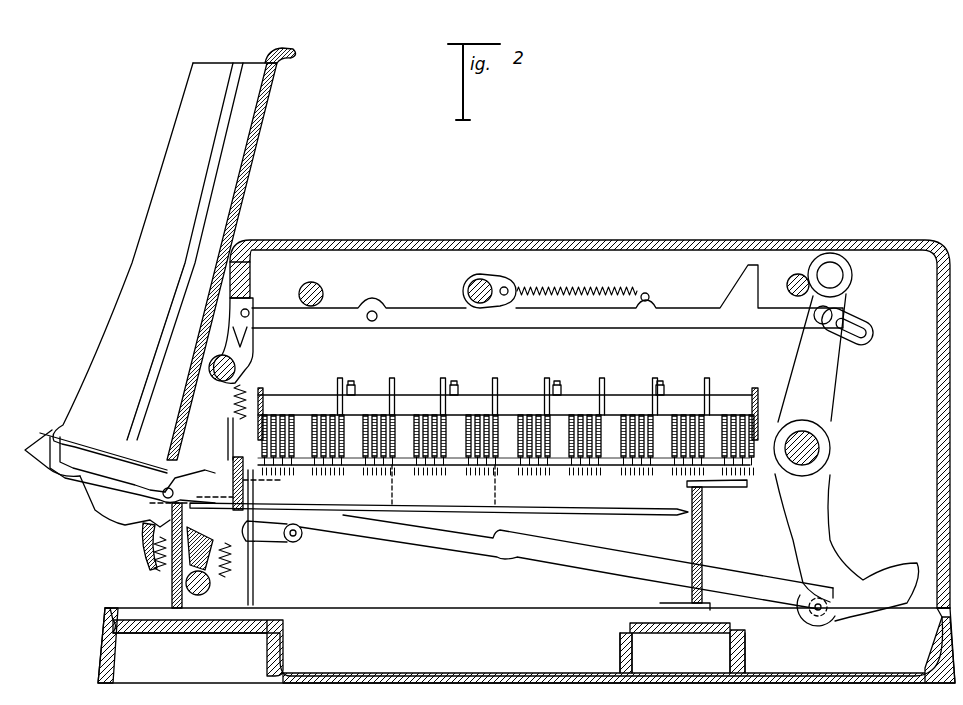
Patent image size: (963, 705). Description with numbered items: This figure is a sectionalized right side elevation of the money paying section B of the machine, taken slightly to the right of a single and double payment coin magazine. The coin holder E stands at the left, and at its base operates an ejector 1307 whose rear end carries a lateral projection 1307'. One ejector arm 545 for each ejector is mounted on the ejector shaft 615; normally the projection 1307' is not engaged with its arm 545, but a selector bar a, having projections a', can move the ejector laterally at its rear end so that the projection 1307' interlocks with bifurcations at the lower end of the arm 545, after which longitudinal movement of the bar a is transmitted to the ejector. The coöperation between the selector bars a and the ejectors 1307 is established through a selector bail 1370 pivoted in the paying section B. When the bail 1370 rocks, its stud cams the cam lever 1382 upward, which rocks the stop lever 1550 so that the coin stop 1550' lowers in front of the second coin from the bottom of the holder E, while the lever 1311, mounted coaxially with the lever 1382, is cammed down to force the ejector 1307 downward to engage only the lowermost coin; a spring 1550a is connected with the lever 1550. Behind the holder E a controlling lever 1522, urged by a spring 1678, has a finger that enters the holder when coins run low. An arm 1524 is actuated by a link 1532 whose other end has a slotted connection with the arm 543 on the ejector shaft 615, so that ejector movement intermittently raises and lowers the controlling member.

The coin holder E is at (178, 182).
The money paying section B is at (438, 245).
The link 1532 is at (461, 322).
The arm 543 is at (810, 353).
The ejector shaft 615 is at (831, 448).
The ejector arm 545 is at (803, 517).
The lateral projection 1307' is at (821, 627).
The ejector 1307 is at (566, 562).
The lever 1311 is at (299, 512).
The selector bail 1370 is at (615, 506).
The selector bar a is at (508, 430).
The projection a' is at (504, 479).
The arm 1524 is at (243, 346).
The controlling lever 1522 is at (217, 398).
The spring 1678 is at (230, 408).
The coin stop 1550' is at (42, 441).
The stop lever 1550 is at (111, 487).
The spring 1550a is at (157, 550).
The cam lever 1382 is at (244, 490).